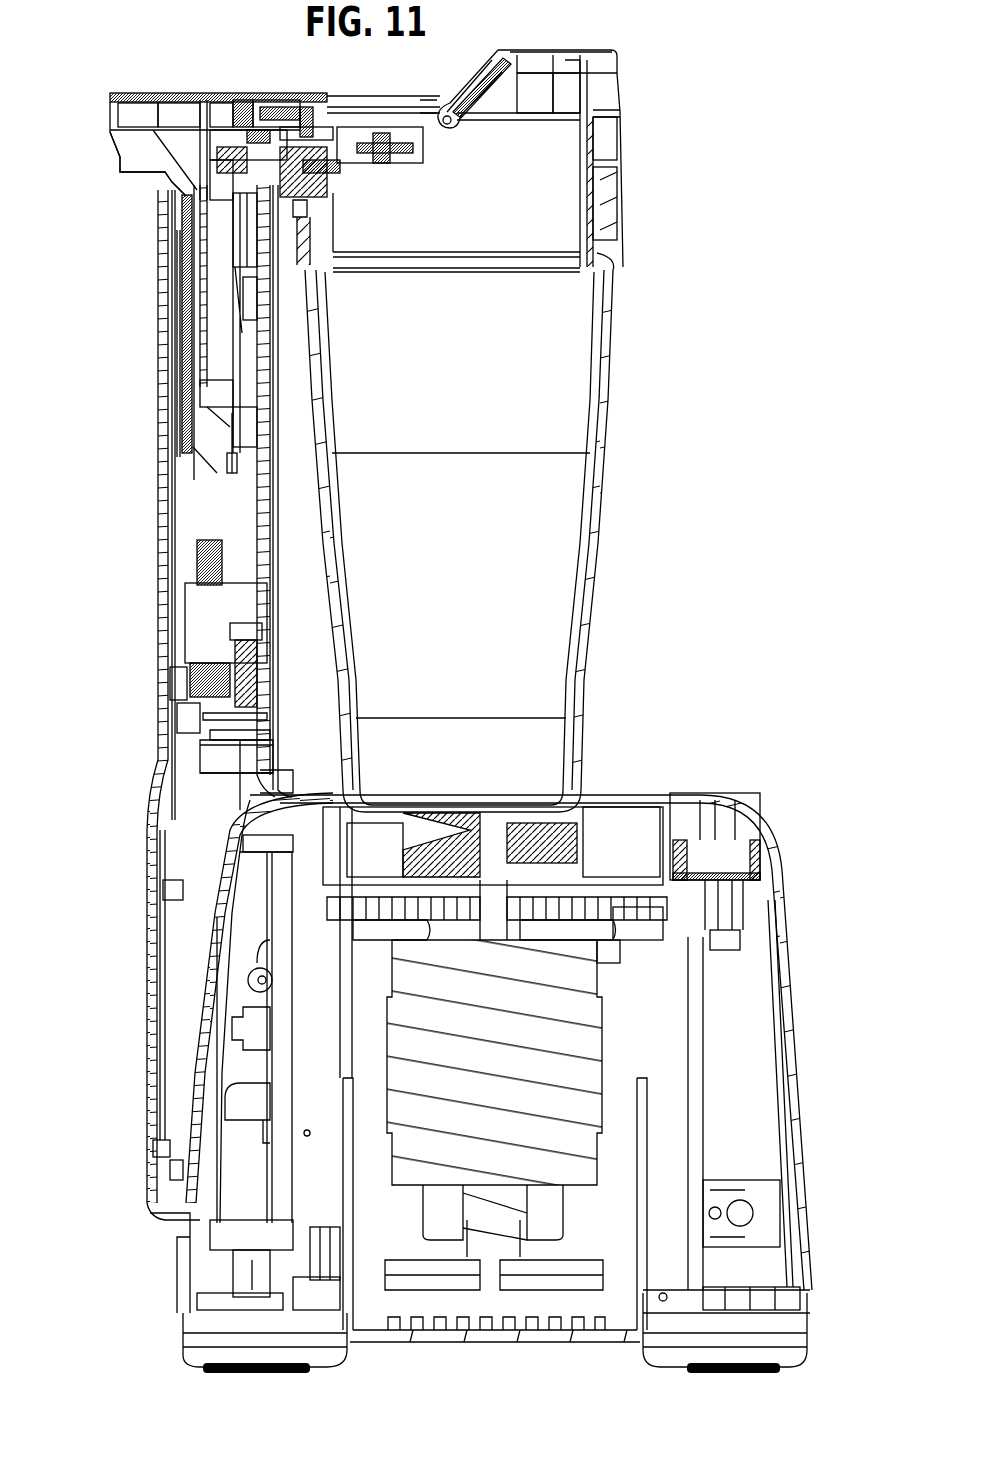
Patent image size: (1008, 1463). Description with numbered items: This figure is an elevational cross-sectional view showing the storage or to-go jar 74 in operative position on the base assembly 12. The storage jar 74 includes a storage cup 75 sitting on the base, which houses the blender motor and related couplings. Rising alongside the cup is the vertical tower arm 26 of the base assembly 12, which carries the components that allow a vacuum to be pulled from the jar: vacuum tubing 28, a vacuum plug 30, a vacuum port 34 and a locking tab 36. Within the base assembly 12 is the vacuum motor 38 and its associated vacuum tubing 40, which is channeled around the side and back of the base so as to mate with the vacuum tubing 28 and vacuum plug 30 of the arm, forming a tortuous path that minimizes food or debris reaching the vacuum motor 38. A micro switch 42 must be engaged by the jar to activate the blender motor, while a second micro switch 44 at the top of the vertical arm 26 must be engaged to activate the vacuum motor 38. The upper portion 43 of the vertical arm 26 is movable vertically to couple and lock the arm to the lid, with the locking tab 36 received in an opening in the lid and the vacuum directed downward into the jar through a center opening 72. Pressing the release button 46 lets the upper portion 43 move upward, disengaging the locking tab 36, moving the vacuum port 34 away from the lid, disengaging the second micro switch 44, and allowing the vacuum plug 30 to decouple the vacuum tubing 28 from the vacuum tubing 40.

The base assembly 12 is at (790, 923).
The vertical tower arm 26 is at (153, 403).
The vacuum tubing 28 is at (233, 355).
The vacuum plug 30 is at (233, 647).
The vacuum port 34 is at (232, 95).
The locking tab 36 is at (318, 120).
The vacuum motor 38 is at (767, 1217).
The vacuum tubing 40 is at (253, 750).
The micro switch 42 is at (247, 793).
The upper portion 43 is at (167, 162).
The second micro switch 44 is at (247, 93).
The release button 46 is at (122, 160).
The center opening 72 is at (375, 155).
The storage jar 74 is at (633, 185).
The storage cup 75 is at (625, 446).